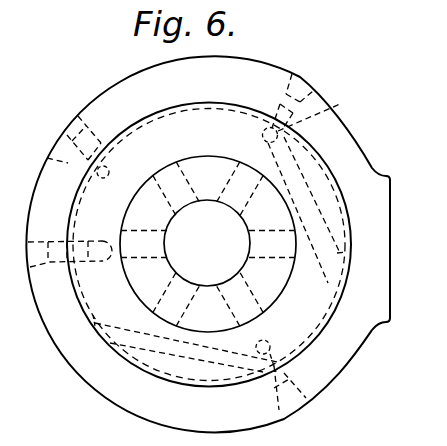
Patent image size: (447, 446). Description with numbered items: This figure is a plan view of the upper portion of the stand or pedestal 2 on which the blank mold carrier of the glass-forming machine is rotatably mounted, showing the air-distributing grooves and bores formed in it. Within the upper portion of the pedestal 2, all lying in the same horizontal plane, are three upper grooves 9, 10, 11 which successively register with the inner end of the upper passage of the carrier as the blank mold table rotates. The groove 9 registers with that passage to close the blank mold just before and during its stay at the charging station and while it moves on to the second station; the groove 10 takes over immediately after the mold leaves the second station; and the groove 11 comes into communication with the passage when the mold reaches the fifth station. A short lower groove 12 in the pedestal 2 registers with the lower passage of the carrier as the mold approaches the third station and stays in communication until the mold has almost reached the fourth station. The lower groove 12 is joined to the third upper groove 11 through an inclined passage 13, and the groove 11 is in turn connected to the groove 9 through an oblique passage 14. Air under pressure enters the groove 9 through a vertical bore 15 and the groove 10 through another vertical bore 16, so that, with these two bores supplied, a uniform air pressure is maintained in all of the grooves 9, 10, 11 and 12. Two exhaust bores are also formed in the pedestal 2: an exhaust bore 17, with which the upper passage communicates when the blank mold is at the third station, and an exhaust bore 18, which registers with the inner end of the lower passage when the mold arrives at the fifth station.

The pedestal 2 is at (102, 370).
The groove 9 is at (227, 103).
The groove 10 is at (78, 116).
The groove 11 is at (308, 342).
The lower groove 12 is at (97, 322).
The inclined passage 13 is at (180, 360).
The oblique passage 14 is at (342, 212).
The vertical bore 15 is at (340, 104).
The vertical bore 16 is at (109, 168).
The exhaust bore 17 is at (110, 218).
The exhaust bore 18 is at (268, 341).